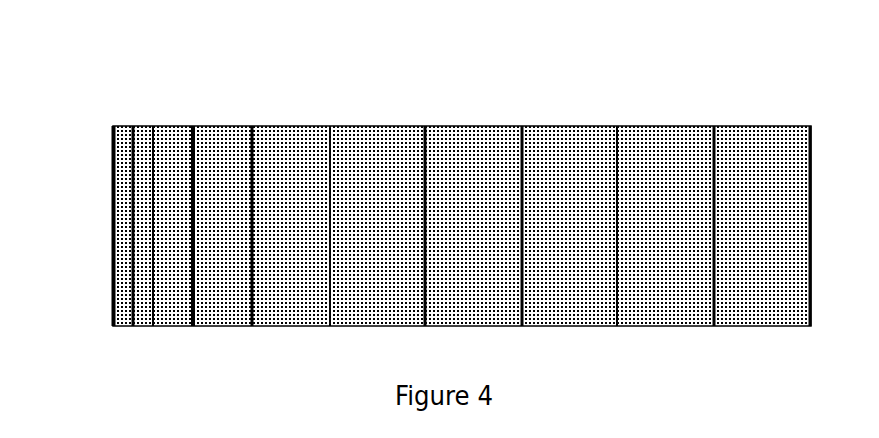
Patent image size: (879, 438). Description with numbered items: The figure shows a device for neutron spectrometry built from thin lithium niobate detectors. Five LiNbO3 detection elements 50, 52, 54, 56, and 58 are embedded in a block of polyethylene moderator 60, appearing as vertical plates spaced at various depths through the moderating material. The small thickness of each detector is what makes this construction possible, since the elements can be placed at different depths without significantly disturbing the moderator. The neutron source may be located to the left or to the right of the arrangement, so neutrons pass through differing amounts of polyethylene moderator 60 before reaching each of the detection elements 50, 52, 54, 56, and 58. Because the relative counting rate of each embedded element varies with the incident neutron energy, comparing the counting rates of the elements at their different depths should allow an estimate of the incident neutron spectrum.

The LiNbO3 detection element 50 is at (132, 125).
The LiNbO3 detection element 52 is at (153, 125).
The LiNbO3 detection element 54 is at (192, 125).
The LiNbO3 detection element 56 is at (520, 125).
The LiNbO3 detection element 58 is at (617, 125).
The polyethylene moderator 60 is at (451, 125).